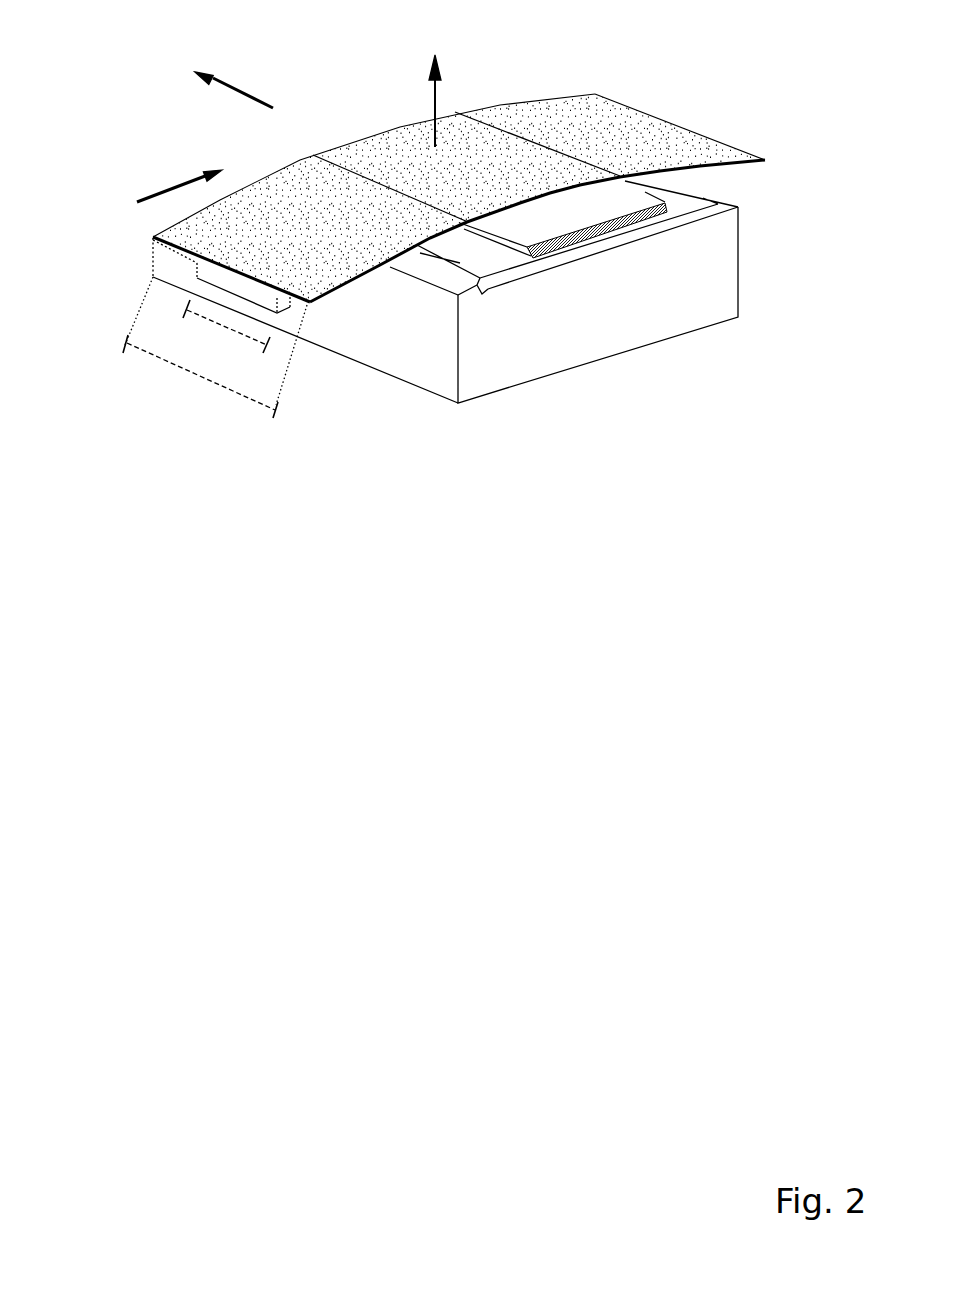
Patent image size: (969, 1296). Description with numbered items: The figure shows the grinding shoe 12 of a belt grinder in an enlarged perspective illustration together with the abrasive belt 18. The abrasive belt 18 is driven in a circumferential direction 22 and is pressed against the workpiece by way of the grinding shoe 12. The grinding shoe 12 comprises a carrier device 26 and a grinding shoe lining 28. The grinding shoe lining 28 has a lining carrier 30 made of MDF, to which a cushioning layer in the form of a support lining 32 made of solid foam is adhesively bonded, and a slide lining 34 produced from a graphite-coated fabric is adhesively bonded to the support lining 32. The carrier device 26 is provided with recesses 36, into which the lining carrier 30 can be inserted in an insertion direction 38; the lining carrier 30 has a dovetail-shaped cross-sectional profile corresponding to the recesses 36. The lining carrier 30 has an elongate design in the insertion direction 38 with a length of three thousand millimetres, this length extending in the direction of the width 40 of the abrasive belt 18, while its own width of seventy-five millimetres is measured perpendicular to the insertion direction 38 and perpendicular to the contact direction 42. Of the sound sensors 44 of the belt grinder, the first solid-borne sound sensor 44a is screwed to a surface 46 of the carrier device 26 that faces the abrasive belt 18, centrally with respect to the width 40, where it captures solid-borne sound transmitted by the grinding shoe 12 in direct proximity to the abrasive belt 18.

The grinding shoe 12 is at (433, 281).
The abrasive belt 18 is at (700, 143).
The circumferential direction 22 is at (180, 185).
The carrier device 26 is at (678, 323).
The grinding shoe lining 28 is at (660, 258).
The lining carrier 30 is at (500, 283).
The support lining 32 is at (653, 200).
The slide lining 34 is at (595, 144).
The recesses 36 is at (728, 248).
The insertion direction 38 is at (257, 97).
The width of the abrasive belt 40 is at (178, 368).
The contact direction 42 is at (432, 113).
The sound sensors 44 is at (162, 268).
The first solid-borne sound sensor 44a is at (203, 270).
The surface of the carrier device 46 is at (410, 365).